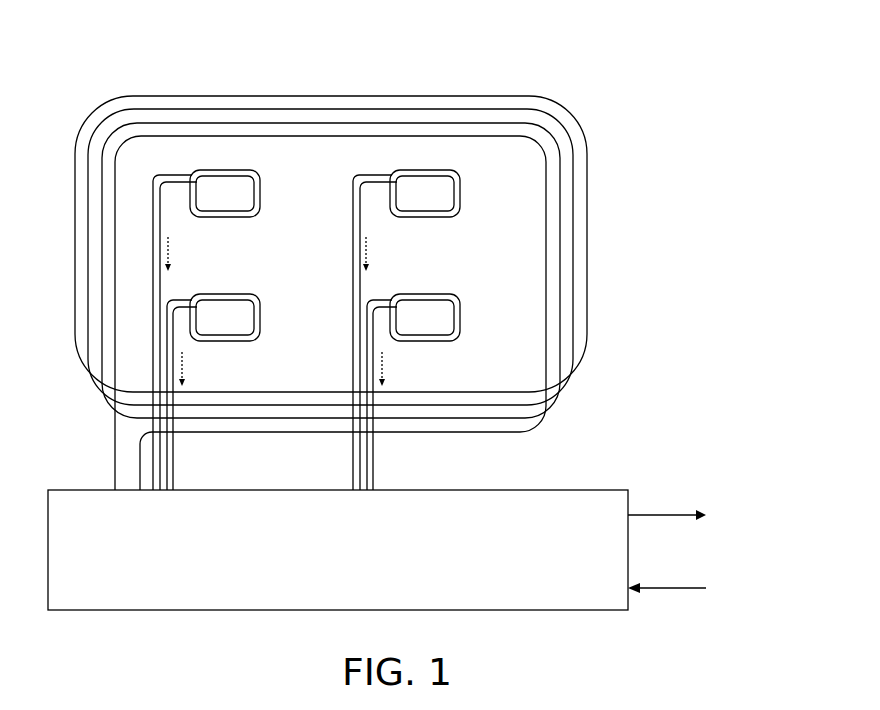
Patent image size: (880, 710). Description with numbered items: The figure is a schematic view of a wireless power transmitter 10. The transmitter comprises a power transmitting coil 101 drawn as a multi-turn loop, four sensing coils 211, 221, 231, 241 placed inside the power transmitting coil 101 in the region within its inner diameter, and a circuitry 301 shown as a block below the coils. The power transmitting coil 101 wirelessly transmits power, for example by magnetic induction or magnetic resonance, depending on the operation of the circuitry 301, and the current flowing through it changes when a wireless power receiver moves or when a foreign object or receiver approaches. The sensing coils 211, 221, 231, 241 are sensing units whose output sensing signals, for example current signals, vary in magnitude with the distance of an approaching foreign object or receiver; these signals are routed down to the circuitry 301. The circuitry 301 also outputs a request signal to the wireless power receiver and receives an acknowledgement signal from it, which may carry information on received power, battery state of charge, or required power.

The wireless power transmitter 10 is at (403, 29).
The power transmitting coil 101 is at (479, 96).
The sensing coil 211 is at (268, 190).
The sensing coil 221 is at (468, 190).
The sensing coil 231 is at (268, 314).
The sensing coil 241 is at (468, 314).
The circuitry 301 is at (567, 489).